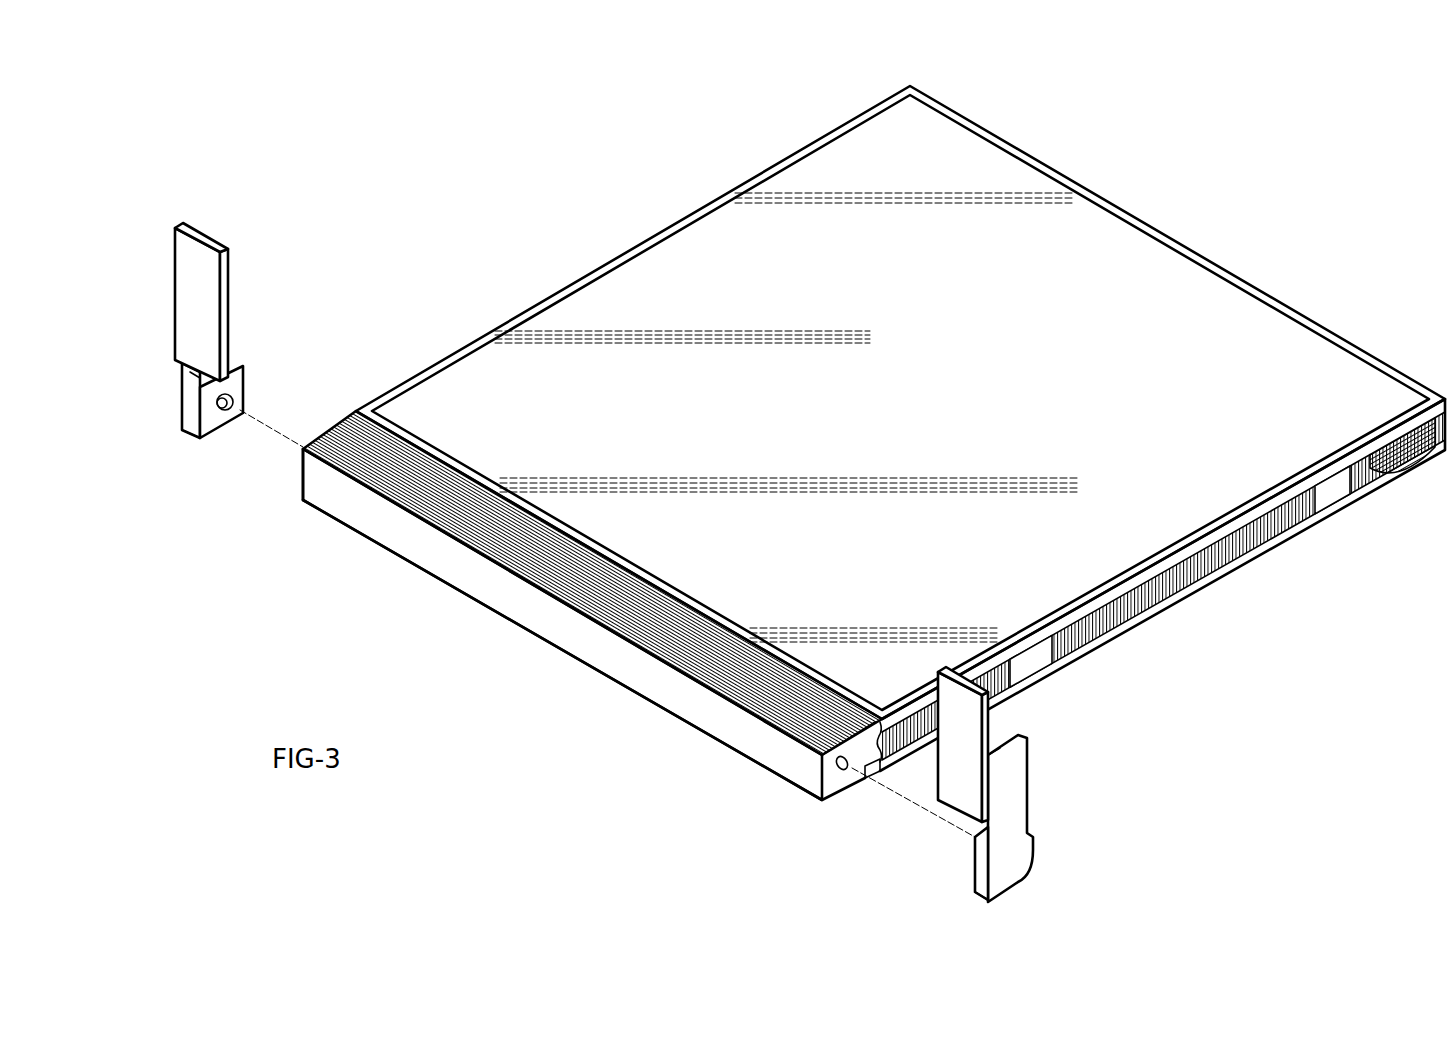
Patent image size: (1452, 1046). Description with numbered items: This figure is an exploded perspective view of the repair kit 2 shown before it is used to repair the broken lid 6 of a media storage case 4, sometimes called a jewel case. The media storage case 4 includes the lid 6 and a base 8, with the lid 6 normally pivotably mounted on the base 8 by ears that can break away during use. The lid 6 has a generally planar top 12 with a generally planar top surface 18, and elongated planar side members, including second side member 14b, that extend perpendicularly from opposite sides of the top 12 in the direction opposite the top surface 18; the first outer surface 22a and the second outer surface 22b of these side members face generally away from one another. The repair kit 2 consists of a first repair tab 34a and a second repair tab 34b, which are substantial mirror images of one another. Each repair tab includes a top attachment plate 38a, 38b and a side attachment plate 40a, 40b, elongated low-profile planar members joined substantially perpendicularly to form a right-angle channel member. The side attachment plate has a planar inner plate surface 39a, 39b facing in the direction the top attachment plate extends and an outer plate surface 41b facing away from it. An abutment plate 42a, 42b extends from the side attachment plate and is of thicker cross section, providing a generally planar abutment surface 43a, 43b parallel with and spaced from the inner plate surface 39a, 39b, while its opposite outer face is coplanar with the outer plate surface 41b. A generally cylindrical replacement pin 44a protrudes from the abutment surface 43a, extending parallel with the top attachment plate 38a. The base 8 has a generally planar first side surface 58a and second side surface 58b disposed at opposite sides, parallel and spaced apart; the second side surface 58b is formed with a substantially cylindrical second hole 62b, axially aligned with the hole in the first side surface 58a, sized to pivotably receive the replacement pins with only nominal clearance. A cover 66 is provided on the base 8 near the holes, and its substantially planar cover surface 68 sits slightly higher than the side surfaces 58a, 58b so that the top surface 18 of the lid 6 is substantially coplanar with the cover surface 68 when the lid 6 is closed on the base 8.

The repair kit 2 is at (650, 553).
The media storage case 4 is at (253, 503).
The lid 6 is at (852, 477).
The base 8 is at (668, 727).
The top 12 is at (852, 477).
The second side member 14b is at (1113, 637).
The top surface 18 is at (1237, 322).
The first outer surface 22a is at (549, 298).
The second outer surface 22b is at (1162, 585).
The first repair tab 34a is at (222, 337).
The second repair tab 34b is at (1008, 755).
The top attachment plate 38a is at (230, 267).
The top attachment plate 38b is at (957, 702).
The inner plate surface 39a is at (190, 375).
The inner plate surface 39b is at (1008, 722).
The side attachment plate 40a is at (188, 372).
The side attachment plate 40b is at (1077, 774).
The outer plate surface 41b is at (1010, 814).
The abutment plate 42a is at (188, 428).
The abutment plate 42b is at (980, 882).
The abutment surface 43a is at (238, 384).
The abutment surface 43b is at (973, 855).
The replacement pin 44a is at (233, 404).
The first side surface 58a is at (303, 486).
The second side surface 58b is at (834, 787).
The second hole 62b is at (852, 770).
The cover 66 is at (568, 607).
The cover surface 68 is at (785, 706).